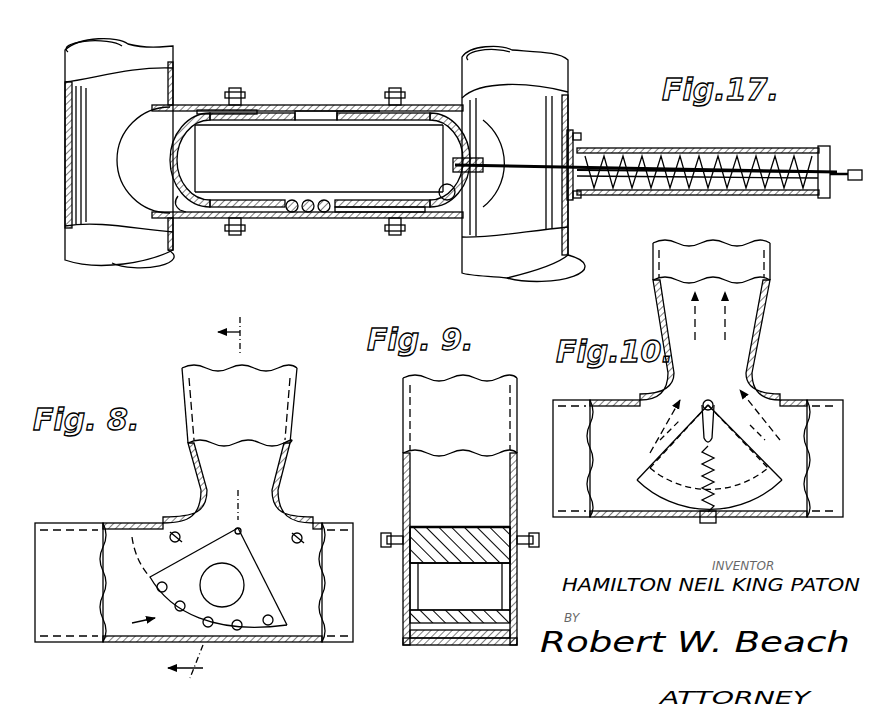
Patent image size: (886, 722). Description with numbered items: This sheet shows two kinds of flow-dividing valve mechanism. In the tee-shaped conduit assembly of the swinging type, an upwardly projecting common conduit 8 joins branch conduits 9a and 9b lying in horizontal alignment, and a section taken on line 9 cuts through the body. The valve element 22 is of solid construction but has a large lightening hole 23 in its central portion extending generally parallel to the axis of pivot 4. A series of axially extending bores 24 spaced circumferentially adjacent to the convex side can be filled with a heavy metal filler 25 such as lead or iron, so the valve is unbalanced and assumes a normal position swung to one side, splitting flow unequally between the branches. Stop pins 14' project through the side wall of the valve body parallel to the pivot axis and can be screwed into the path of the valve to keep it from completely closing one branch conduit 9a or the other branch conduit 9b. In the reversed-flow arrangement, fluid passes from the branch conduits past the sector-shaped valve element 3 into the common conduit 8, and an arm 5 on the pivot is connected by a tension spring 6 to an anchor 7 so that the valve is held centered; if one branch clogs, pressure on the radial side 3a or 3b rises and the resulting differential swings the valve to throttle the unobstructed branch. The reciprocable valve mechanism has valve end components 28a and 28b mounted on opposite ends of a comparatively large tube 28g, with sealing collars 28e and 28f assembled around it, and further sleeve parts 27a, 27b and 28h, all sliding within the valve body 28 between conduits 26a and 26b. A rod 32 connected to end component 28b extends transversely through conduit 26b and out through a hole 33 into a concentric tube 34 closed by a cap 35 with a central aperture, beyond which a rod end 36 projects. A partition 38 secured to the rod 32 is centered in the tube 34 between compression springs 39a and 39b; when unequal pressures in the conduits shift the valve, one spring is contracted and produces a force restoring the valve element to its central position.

In FIG. 17, the conduit 26a is at (157, 54).
In FIG. 17, the conduit 26b is at (462, 72).
In FIG. 17, the inner tube domed end 27a is at (205, 108).
In FIG. 17, the inner tube domed end 27b is at (437, 110).
In FIG. 17, the valve body 28 is at (266, 105).
In FIG. 17, the valve end component 28a is at (186, 216).
In FIG. 17, the valve end component 28b is at (437, 220).
In FIG. 17, the sealing collar 28e is at (290, 214).
In FIG. 17, the sealing collar 28f is at (330, 112).
In FIG. 17, the large tube 28g is at (300, 118).
In FIG. 17, the sleeve 28h is at (333, 220).
In FIG. 17, the rod 32 is at (570, 132).
In FIG. 17, the hole 33 is at (570, 210).
In FIG. 17, the tube 34 is at (690, 196).
In FIG. 17, the cap 35 is at (824, 148).
In FIG. 17, the rod end 36 is at (838, 182).
In FIG. 17, the partition 38 is at (707, 152).
In FIG. 17, the compression spring 39a is at (622, 150).
In FIG. 17, the compression spring 39b is at (762, 196).
In FIG. 8, the common conduit 8 is at (284, 398).
In FIG. 9, the common conduit 8 is at (427, 418).
In FIG. 10, the common conduit 8 is at (755, 262).
In FIG. 8, the section line 9 is at (217, 500).
In FIG. 8, the branch conduit 9a is at (68, 536).
In FIG. 9, the branch conduit 9a is at (404, 640).
In FIG. 10, the branch conduit 9a is at (572, 418).
In FIG. 8, the branch conduit 9b is at (338, 536).
In FIG. 10, the branch conduit 9b is at (826, 416).
In FIG. 8, the pivot 4 is at (260, 522).
In FIG. 9, the pivot 4 is at (410, 528).
In FIG. 10, the pivot 4 is at (720, 408).
In FIG. 8, the stop pin 14' is at (235, 514).
In FIG. 9, the stop pin 14' is at (473, 528).
In FIG. 8, the valve element 22 is at (129, 587).
In FIG. 9, the valve element 22 is at (478, 527).
In FIG. 8, the lightening hole 23 is at (240, 580).
In FIG. 9, the lightening hole 23 is at (490, 598).
In FIG. 8, the bores 24 is at (237, 632).
In FIG. 9, the bores 24 is at (456, 640).
In FIG. 8, the heavy metal filler 25 is at (285, 642).
In FIG. 10, the valve element 3 is at (642, 460).
In FIG. 10, the radial side of valve 3a is at (655, 438).
In FIG. 10, the radial side of valve 3b is at (766, 440).
In FIG. 10, the arm 5 is at (704, 410).
In FIG. 10, the tension spring 6 is at (702, 520).
In FIG. 10, the anchor 7 is at (716, 517).